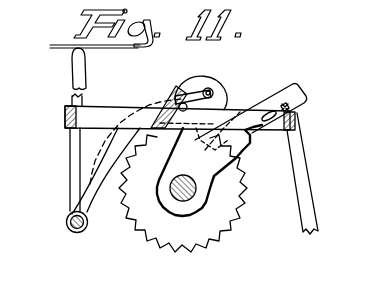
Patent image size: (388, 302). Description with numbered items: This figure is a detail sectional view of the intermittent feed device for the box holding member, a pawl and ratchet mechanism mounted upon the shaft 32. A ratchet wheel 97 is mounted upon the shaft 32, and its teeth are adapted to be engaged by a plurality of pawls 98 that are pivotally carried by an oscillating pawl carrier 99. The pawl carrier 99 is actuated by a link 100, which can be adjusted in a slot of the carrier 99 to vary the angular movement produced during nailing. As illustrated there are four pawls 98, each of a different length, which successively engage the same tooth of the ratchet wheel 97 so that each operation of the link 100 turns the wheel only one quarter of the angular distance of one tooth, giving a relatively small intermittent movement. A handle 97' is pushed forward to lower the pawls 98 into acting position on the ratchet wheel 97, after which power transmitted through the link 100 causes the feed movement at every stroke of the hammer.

The handle 97' is at (88, 140).
The ratchet wheel 97 is at (187, 195).
The pawls 98 is at (182, 87).
The oscillating pawl carrier 99 is at (205, 150).
The link 100 is at (307, 192).
The shaft 32 is at (188, 196).